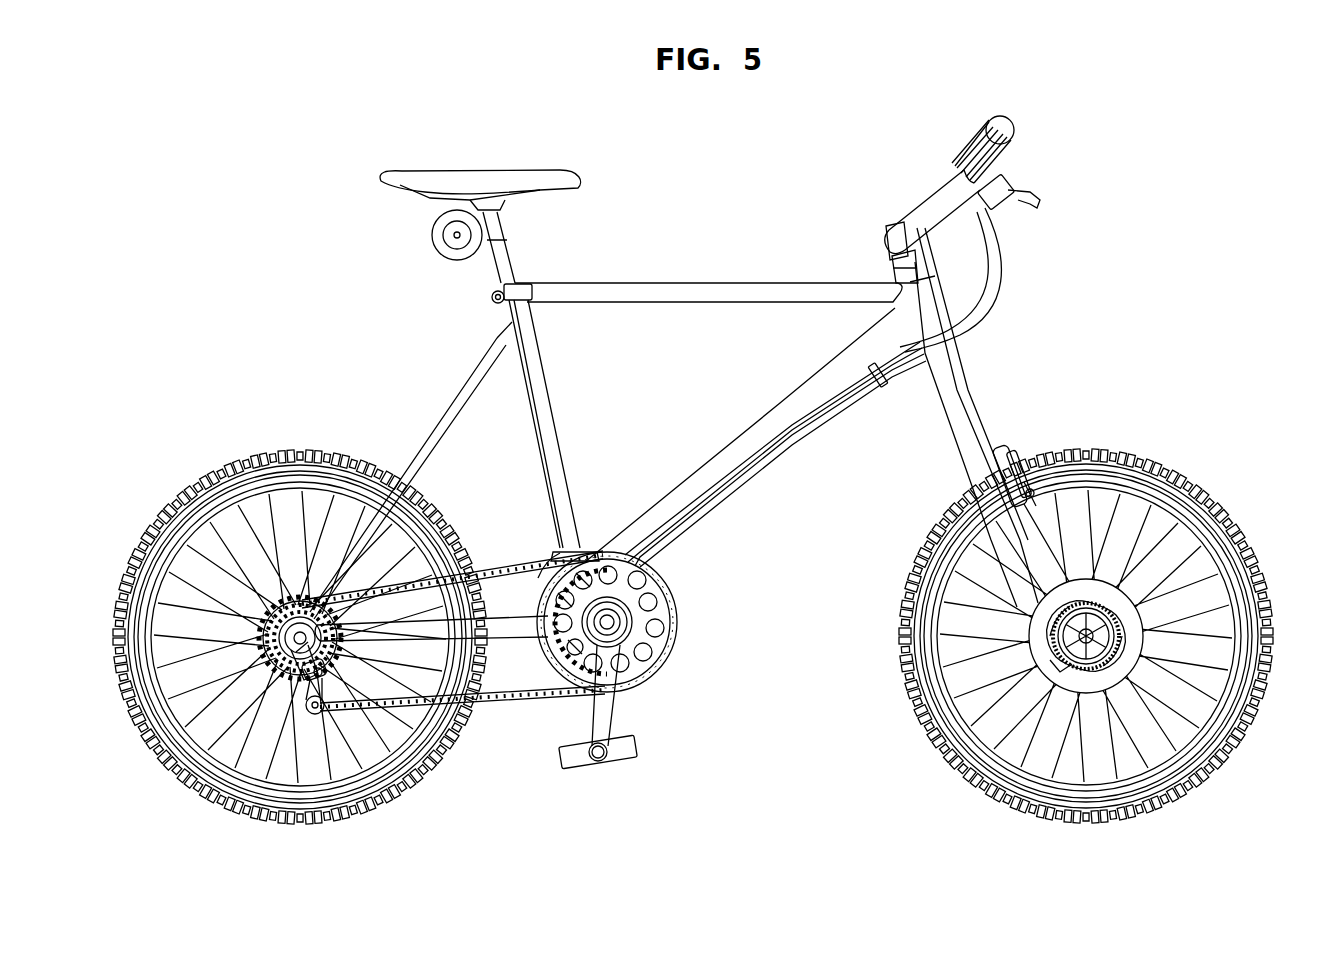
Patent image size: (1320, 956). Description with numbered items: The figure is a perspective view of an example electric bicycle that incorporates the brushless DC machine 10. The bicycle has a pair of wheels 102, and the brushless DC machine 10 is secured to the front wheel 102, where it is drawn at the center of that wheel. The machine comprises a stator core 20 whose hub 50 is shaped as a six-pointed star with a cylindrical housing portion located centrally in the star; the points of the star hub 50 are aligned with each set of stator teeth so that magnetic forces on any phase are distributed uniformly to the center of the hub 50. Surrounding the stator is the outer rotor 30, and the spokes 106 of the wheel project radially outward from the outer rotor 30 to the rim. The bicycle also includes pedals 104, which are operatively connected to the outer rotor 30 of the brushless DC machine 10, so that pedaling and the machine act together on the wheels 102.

The brushless DC machine 10 is at (1065, 636).
The stator core 20 is at (1050, 622).
The outer rotor 30 is at (1050, 604).
The hub 50 is at (1126, 612).
The wheels 102 is at (305, 452).
The pedals 104 is at (630, 758).
The spokes 106 is at (228, 563).